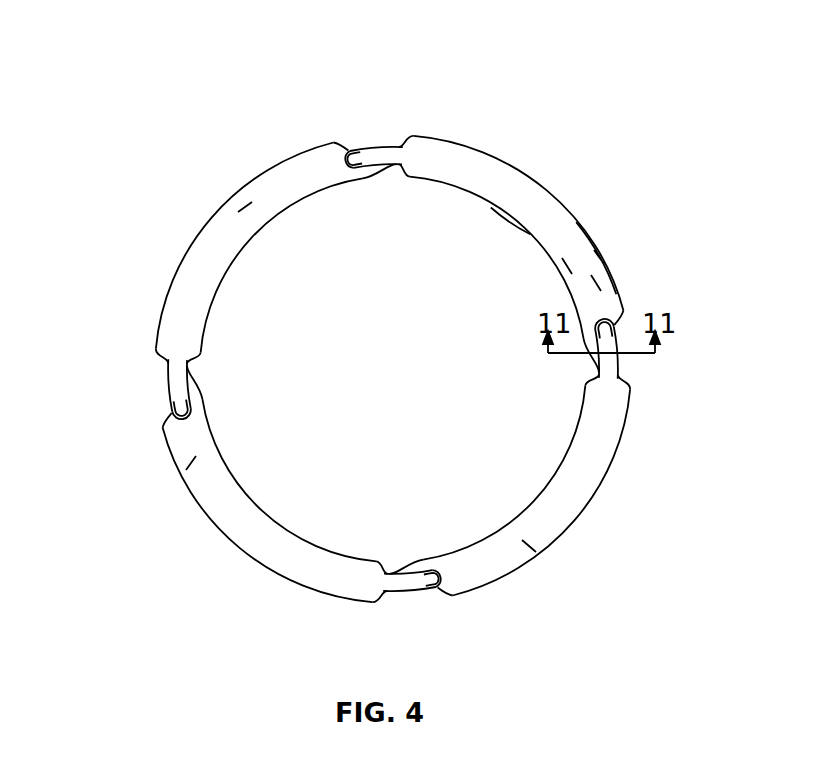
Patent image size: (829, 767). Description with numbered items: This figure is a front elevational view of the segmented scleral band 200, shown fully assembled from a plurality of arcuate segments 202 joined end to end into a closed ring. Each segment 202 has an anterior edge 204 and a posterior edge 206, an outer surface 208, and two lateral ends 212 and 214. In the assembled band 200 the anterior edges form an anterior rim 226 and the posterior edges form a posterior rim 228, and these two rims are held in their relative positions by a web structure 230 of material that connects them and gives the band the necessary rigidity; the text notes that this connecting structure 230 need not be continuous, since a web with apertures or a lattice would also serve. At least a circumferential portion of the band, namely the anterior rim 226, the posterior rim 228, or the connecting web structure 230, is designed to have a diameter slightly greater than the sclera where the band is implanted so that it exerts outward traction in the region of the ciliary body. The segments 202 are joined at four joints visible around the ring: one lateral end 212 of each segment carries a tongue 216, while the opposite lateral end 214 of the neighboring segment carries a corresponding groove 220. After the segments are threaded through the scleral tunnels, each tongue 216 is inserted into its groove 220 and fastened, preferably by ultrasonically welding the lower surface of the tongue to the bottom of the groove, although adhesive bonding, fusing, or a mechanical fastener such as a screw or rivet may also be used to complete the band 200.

The scleral band 200 is at (412, 345).
The segment 202 is at (412, 345).
The anterior edge 204 is at (236, 262).
The posterior edge 206 is at (166, 266).
The outer surface 208 is at (245, 205).
The lateral end 212 is at (404, 140).
The lateral end 214 is at (378, 148).
The tongue 216 is at (367, 148).
The groove 220 is at (345, 146).
The anterior rim 226 is at (515, 222).
The posterior rim 228 is at (600, 257).
The web structure 230 is at (597, 283).